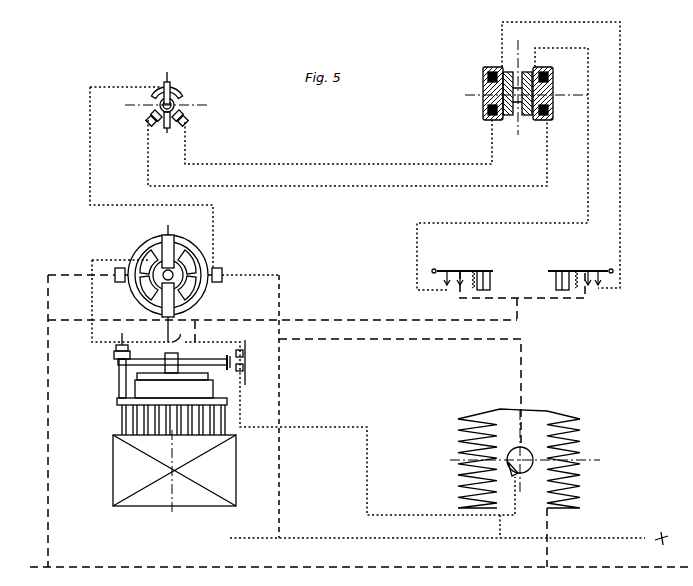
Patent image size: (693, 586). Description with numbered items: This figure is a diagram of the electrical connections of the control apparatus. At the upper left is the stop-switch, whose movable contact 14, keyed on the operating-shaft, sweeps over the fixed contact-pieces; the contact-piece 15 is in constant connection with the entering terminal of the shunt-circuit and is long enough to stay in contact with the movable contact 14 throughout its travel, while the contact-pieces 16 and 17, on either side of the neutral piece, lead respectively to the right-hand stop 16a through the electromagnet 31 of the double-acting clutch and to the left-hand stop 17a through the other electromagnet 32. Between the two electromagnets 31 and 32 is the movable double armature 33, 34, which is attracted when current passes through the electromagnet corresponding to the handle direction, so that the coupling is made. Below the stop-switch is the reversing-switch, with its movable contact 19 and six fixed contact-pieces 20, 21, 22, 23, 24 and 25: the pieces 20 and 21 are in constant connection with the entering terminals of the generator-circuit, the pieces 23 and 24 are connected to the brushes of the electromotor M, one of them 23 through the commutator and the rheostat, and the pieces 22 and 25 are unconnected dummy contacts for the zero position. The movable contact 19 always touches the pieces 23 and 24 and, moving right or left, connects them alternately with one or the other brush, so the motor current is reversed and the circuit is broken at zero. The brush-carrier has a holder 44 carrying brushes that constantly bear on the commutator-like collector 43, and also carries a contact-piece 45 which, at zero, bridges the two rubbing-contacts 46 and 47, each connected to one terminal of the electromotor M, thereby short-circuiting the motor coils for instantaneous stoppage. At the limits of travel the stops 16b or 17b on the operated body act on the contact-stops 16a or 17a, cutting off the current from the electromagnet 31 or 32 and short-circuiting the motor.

The movable contact 14 is at (171, 86).
The contact-piece 15 is at (178, 94).
The contact-piece 16 is at (186, 112).
The contact-piece 17 is at (152, 112).
The movable contact 19 is at (160, 240).
The fixed contact-piece 20 is at (208, 257).
The fixed contact-piece 21 is at (138, 260).
The fixed contact-piece 22 is at (166, 235).
The fixed contact-piece 23 is at (187, 247).
The fixed contact-piece 24 is at (152, 289).
The fixed contact-piece 25 is at (190, 303).
The electromagnet 31 is at (483, 80).
The electromagnet 32 is at (553, 80).
The armature 33 is at (528, 70).
The armature 34 is at (508, 70).
The left-hand stop 17a is at (482, 271).
The stop 17b is at (488, 276).
The right-hand stop 16a is at (574, 272).
The stop 16b is at (562, 280).
The commutator-like collector 43 is at (174, 444).
The holder 44 is at (118, 363).
The contact-piece 45 is at (222, 355).
The rubbing-contact 46 is at (243, 353).
The rubbing-contact 47 is at (243, 368).
The electromotor M is at (527, 455).